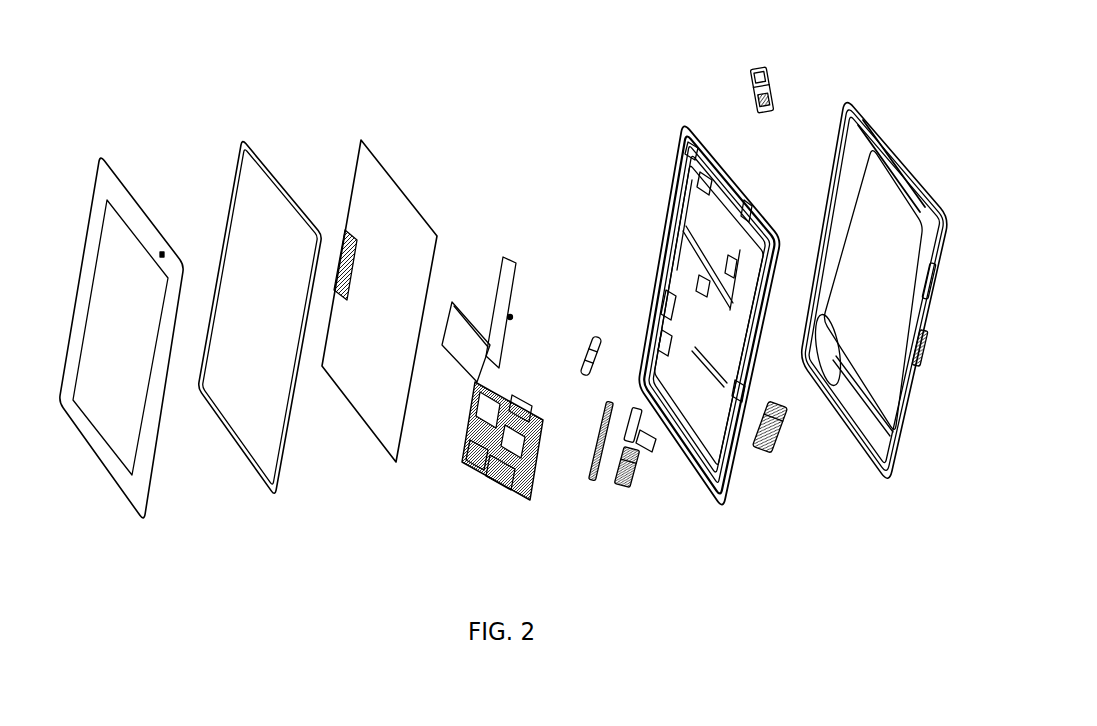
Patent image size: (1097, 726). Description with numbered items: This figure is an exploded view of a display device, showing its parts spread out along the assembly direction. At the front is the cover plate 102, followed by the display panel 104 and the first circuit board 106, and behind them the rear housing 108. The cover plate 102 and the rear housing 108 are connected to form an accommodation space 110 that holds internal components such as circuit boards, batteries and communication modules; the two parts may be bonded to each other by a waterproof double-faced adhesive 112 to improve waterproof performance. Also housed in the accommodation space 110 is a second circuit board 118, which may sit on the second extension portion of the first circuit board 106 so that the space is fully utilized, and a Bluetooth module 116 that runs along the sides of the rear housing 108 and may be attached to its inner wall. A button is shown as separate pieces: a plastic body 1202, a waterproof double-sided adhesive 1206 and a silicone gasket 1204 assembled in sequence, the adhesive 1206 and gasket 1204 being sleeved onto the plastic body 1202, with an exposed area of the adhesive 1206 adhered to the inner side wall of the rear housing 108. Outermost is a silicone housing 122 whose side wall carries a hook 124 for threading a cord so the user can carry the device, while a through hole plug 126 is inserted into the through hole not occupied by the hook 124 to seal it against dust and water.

The cover plate 102 is at (101, 166).
The display panel 104 is at (361, 141).
The first circuit board 106 is at (505, 262).
The rear housing 108 is at (688, 138).
The accommodation space 110 is at (658, 219).
The waterproof double-faced adhesive 112 is at (243, 143).
The Bluetooth module 116 is at (608, 452).
The second circuit board 118 is at (518, 487).
The silicone housing 122 is at (856, 108).
The hook 124 is at (765, 71).
The through hole plug 126 is at (782, 455).
The plastic body 1202 is at (630, 490).
The silicone gasket 1204 is at (590, 335).
The waterproof double-sided adhesive 1206 is at (643, 443).